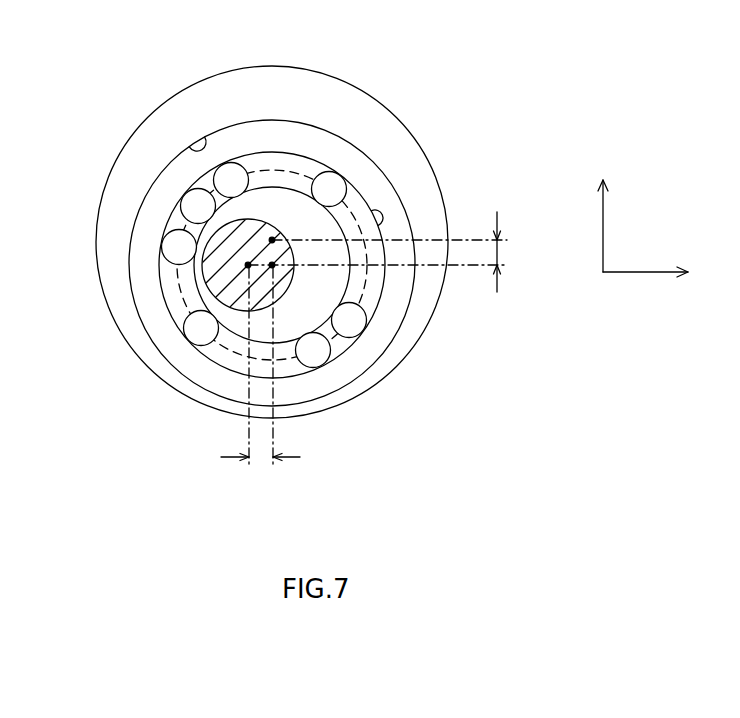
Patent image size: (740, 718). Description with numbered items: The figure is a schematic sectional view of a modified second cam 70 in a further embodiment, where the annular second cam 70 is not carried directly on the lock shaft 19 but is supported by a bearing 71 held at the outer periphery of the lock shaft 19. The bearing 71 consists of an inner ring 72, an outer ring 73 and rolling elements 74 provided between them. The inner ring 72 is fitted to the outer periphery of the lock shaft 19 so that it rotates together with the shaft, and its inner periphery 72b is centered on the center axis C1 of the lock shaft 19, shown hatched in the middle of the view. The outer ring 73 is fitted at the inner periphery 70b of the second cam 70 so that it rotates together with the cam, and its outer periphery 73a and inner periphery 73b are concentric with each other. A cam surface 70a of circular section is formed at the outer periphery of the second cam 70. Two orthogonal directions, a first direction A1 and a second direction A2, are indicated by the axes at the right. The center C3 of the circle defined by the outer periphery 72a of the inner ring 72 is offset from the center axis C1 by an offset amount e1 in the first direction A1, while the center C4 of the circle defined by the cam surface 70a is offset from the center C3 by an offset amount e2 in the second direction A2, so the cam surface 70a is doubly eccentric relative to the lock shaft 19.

The lock shaft 19 is at (236, 301).
The second cam 70 is at (315, 66).
The cam surface 70a is at (227, 66).
The inner periphery of the second cam 70b is at (188, 147).
The bearing 71 is at (329, 128).
The inner ring 72 is at (302, 323).
The outer periphery of the inner ring 72a is at (337, 310).
The inner periphery of the inner ring 72b is at (207, 291).
The outer ring 73 is at (367, 173).
The outer periphery of the outer ring 73a is at (357, 143).
The inner periphery of the outer ring 73b is at (377, 212).
The rolling elements 74 is at (194, 204).
The center axis of the lock shaft C1 is at (248, 265).
The center of the outer periphery of the inner ring C3 is at (274, 267).
The center of the cam surface circle C4 is at (273, 238).
The offset amount e1 is at (257, 462).
The offset amount e2 is at (499, 253).
The first direction A1 is at (614, 280).
The second direction A2 is at (604, 214).